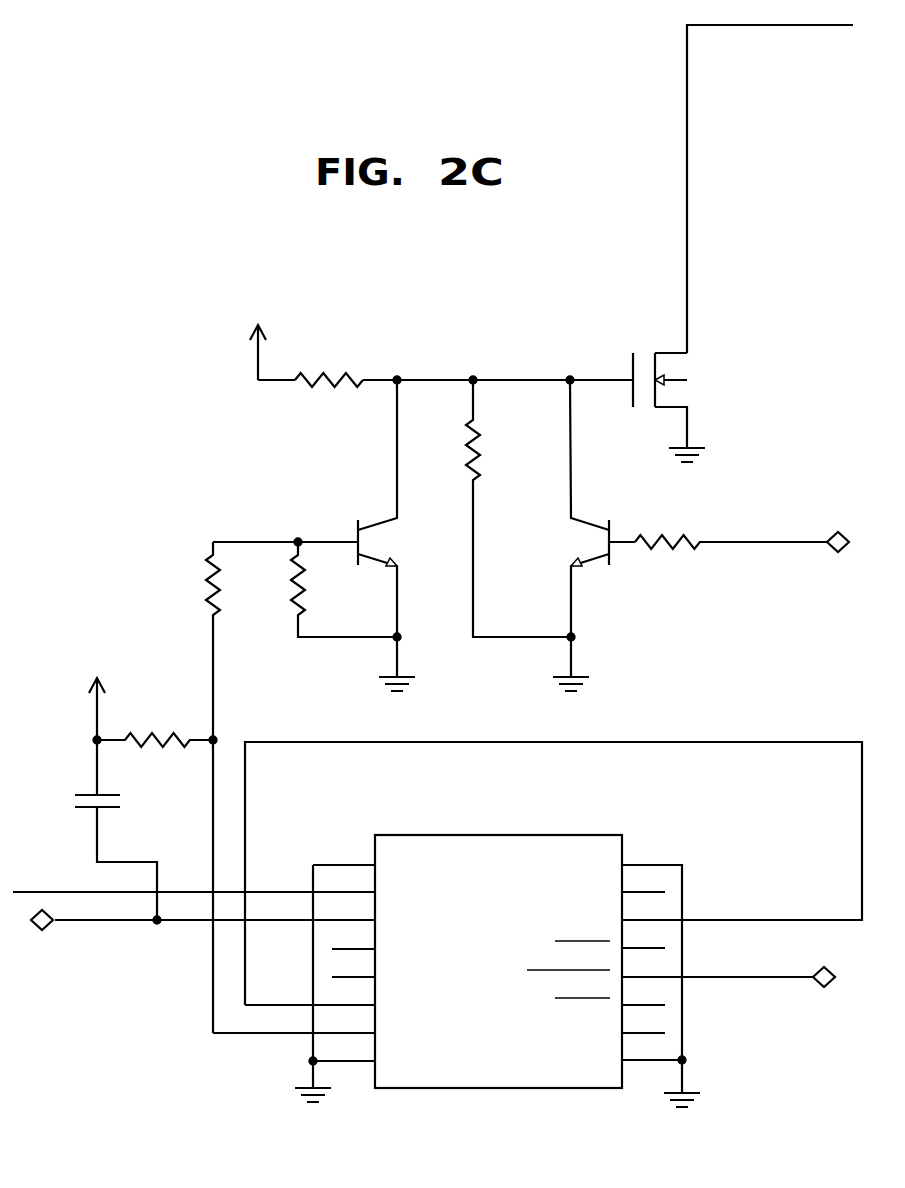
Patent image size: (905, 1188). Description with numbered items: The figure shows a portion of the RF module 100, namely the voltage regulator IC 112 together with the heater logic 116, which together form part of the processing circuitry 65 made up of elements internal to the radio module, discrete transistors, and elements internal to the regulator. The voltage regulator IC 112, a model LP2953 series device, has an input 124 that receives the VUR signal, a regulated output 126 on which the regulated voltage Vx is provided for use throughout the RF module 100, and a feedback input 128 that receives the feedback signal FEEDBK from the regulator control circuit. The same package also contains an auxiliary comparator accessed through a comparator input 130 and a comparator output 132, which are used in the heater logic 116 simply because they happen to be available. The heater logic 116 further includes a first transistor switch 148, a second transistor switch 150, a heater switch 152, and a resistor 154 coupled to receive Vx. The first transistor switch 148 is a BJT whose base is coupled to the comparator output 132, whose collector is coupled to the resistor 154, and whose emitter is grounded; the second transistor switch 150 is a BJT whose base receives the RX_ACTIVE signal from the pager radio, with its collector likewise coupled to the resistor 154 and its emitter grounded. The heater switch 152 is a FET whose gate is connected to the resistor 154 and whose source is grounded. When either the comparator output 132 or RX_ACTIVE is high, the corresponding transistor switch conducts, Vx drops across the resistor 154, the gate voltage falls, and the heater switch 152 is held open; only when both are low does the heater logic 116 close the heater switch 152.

The RF module 100 is at (186, 172).
The heater logic 116 is at (184, 521).
The resistor 154 is at (337, 383).
The first transistor switch 148 is at (360, 551).
The second transistor switch 150 is at (610, 562).
The heater switch 152 is at (692, 365).
The processing circuitry 65 is at (746, 494).
The voltage regulator IC 112 is at (624, 836).
The input 124 is at (336, 893).
The regulated output 126 is at (666, 919).
The feedback input 128 is at (337, 919).
The comparator input 130 is at (323, 1007).
The comparator output 132 is at (328, 1034).